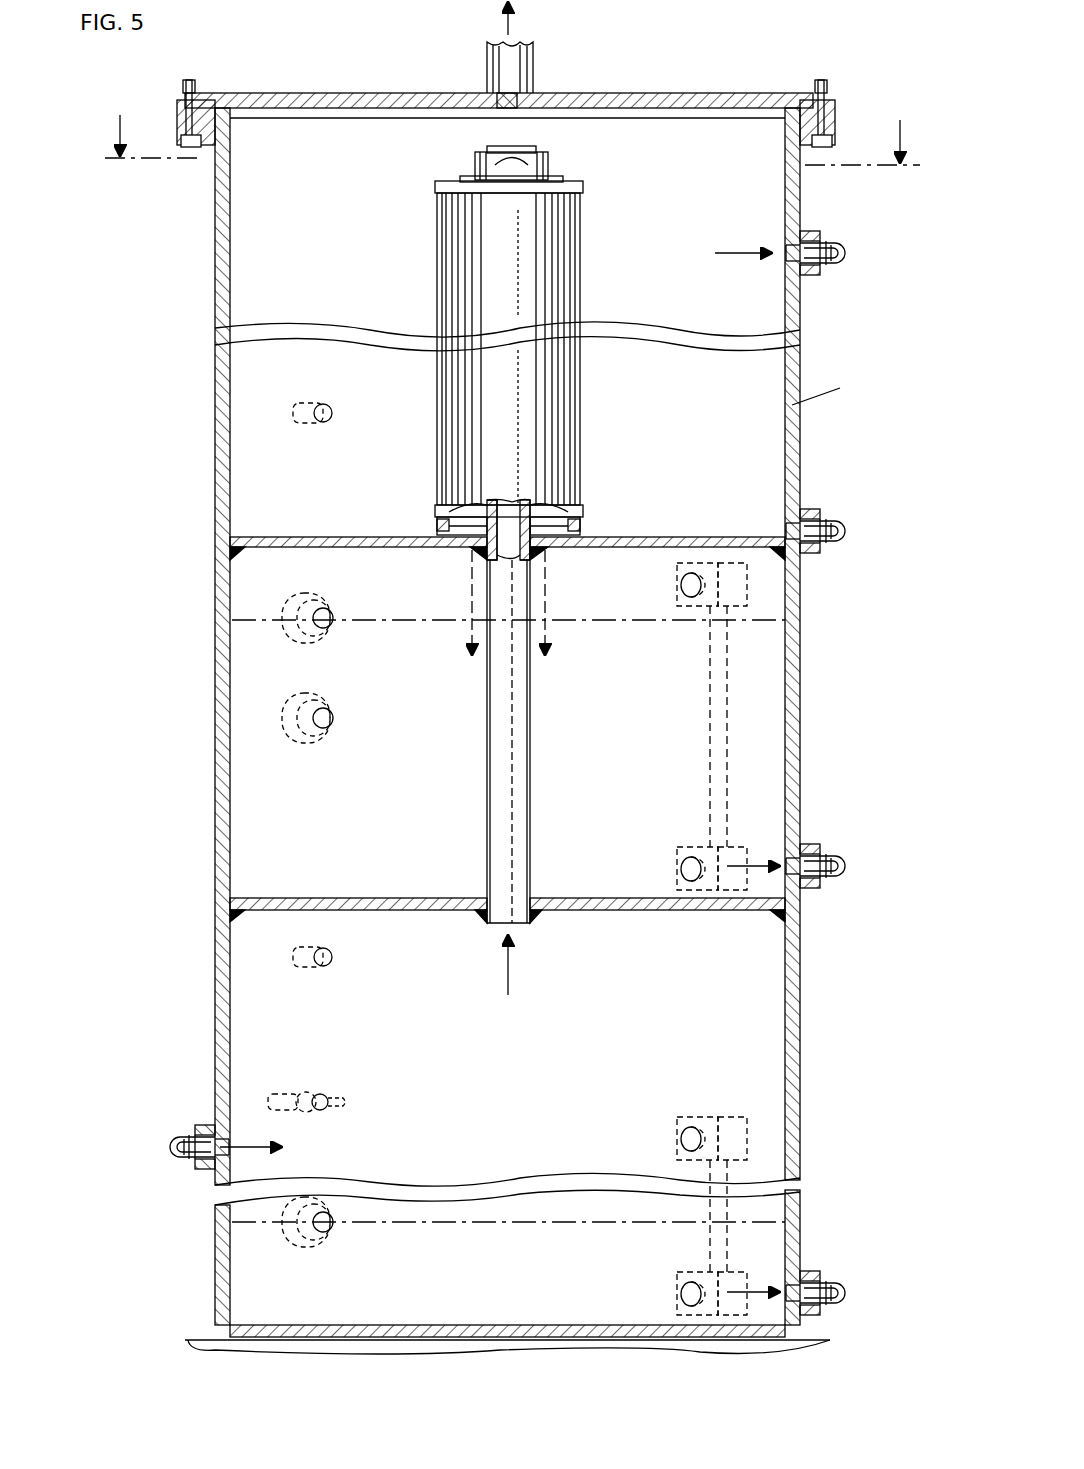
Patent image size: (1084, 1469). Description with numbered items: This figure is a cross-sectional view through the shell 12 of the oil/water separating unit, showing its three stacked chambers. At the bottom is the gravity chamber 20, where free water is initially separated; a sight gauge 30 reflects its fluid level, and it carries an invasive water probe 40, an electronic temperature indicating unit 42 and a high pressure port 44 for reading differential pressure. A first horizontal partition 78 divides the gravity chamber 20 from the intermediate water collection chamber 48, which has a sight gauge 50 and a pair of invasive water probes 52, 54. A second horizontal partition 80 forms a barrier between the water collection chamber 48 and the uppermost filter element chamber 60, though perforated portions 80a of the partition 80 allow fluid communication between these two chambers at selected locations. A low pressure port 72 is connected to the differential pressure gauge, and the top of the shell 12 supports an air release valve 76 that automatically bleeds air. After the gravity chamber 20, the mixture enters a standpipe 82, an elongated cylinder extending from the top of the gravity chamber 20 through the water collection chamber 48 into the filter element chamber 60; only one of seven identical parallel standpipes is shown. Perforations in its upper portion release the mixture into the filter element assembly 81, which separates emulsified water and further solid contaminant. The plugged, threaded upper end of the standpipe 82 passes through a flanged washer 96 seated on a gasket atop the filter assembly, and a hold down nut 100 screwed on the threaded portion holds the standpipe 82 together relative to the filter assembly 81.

The shell 12 is at (825, 457).
The gravity chamber 20 is at (782, 1084).
The sight gauge 30 is at (728, 1222).
The invasive water probe 40 is at (323, 1232).
The electronic temperature indicating unit 42 is at (318, 1095).
The high pressure port 44 is at (325, 948).
The water collection chamber 48 is at (790, 783).
The sight gauge 50 is at (710, 747).
The invasive water probe 52 is at (320, 698).
The invasive water probe 54 is at (325, 598).
The filter element chamber 60 is at (826, 394).
The low pressure port 72 is at (318, 405).
The air release valve 76 is at (523, 78).
The first horizontal partition 78 is at (598, 912).
The second horizontal partition 80 is at (700, 510).
The perforated portions 80a is at (540, 560).
The filter element assembly 81 is at (595, 296).
The standpipe 82 is at (530, 797).
The flanged washer 96 is at (560, 183).
The hold down nut 100 is at (515, 168).